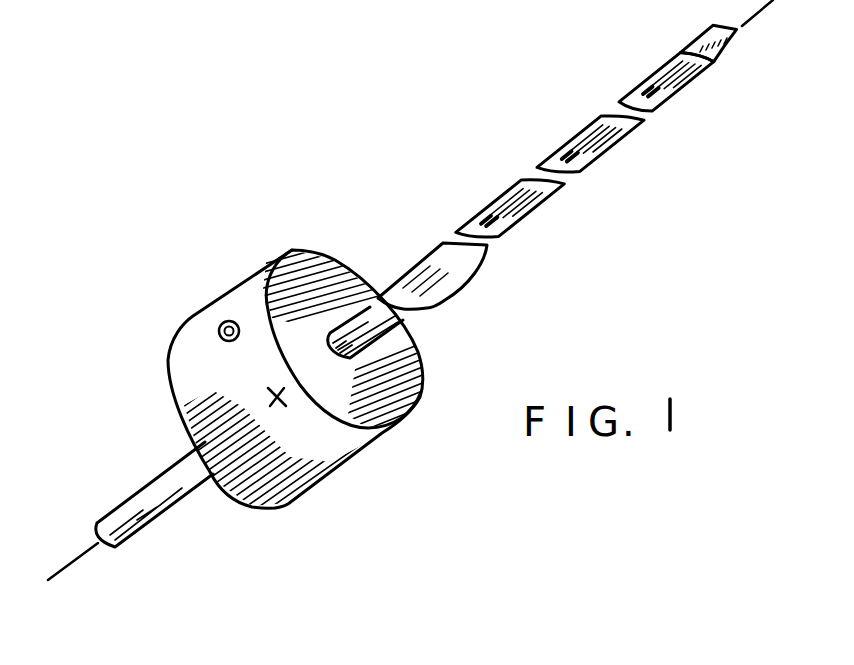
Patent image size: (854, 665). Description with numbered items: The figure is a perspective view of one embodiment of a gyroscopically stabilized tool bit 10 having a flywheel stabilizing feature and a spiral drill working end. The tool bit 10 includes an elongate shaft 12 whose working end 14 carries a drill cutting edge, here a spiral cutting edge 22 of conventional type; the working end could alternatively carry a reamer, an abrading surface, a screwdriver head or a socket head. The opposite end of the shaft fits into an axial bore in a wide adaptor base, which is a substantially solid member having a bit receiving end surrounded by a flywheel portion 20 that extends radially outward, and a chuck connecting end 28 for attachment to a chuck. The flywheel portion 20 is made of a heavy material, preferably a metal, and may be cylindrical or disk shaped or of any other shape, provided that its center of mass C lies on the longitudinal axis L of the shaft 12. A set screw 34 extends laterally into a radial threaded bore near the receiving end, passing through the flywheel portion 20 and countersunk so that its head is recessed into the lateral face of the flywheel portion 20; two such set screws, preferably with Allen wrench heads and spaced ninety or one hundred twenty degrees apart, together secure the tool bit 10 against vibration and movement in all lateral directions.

The gyroscopically stabilized tool bit 10 is at (273, 184).
The elongate shaft 12 is at (554, 191).
The working end 14 is at (735, 34).
The flywheel portion 20 is at (370, 444).
The spiral cutting edge 22 is at (622, 118).
The chuck connecting end 28 is at (84, 481).
The set screw 34 is at (222, 322).
The center of mass C is at (273, 407).
The longitudinal axis L is at (68, 566).